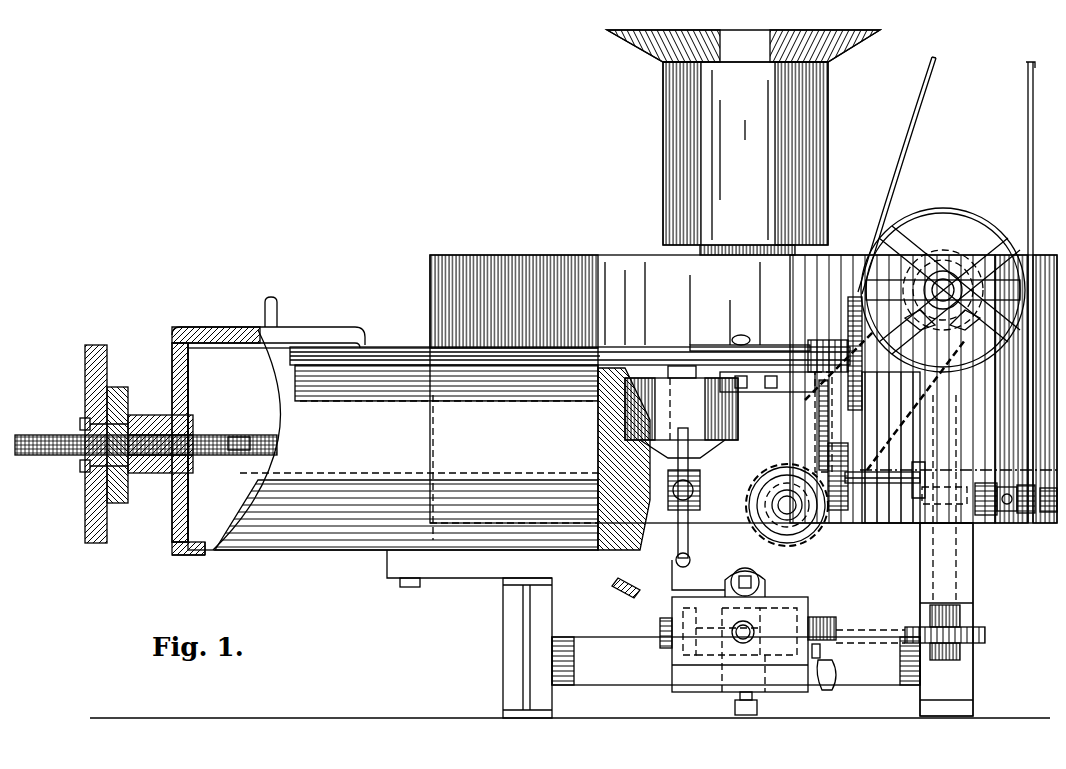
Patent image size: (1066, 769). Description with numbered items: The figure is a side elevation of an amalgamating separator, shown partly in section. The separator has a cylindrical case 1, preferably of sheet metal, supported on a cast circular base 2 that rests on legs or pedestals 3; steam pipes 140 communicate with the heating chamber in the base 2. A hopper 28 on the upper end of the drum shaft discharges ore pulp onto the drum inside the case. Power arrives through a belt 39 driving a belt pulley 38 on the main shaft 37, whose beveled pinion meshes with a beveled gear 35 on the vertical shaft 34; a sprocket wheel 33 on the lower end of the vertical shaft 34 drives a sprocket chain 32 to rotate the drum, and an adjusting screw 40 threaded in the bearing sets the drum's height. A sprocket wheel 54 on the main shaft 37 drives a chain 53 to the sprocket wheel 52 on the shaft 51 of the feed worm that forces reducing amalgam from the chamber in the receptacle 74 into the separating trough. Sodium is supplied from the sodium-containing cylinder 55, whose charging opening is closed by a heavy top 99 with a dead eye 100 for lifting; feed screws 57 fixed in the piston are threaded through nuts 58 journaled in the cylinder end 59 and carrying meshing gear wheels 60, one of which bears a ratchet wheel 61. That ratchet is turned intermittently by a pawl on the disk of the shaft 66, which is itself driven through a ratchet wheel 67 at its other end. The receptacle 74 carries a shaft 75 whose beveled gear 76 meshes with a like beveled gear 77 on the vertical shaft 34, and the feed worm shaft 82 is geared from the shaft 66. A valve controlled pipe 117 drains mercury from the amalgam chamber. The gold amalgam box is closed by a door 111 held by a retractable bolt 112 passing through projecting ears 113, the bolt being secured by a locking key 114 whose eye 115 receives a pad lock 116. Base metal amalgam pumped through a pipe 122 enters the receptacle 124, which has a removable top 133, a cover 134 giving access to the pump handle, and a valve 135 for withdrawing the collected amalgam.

The cylindrical case 1 is at (590, 255).
The cast circular base 2 is at (870, 522).
The legs or pedestals 3 is at (503, 618).
The hopper 28 is at (663, 142).
The sprocket chain 32 is at (876, 644).
The sprocket wheel 33 is at (982, 630).
The vertical shaft 34 is at (930, 615).
The beveled gear 35 is at (942, 329).
The main shaft 37 is at (946, 288).
The belt pulley 38 is at (928, 212).
The belt 39 is at (916, 92).
The adjusting screw 40 is at (735, 705).
The shaft 51 is at (787, 520).
The sprocket wheel 52 is at (805, 530).
The chain 53 is at (916, 416).
The sprocket wheel 54 is at (943, 274).
The sodium-containing cylinder 55 is at (419, 440).
The feed screws 57 is at (30, 435).
The nuts 58 is at (152, 415).
The end of the cylinder 59 is at (188, 392).
The gear wheels 60 is at (115, 387).
The ratchet wheel 61 is at (92, 345).
The shaft 66 is at (622, 347).
The ratchet wheel 67 is at (848, 315).
The receptacle 74 is at (760, 392).
The shaft 75 is at (896, 484).
The beveled gear 76 is at (925, 500).
The beveled gear 77 is at (940, 487).
The shaft 82 is at (238, 437).
The heavy top 99 is at (218, 327).
The dead eye 100 is at (277, 302).
The door 111 is at (770, 605).
The retractable bolt 112 is at (660, 626).
The projecting ears 113 is at (688, 610).
The locking key 114 is at (826, 620).
The eye 115 is at (822, 652).
The pad lock 116 is at (832, 682).
The valve controlled pipe 117 is at (618, 580).
The pipe 122 is at (688, 540).
The receptacle 124 is at (725, 410).
The removable top 133 is at (668, 370).
The cover 134 is at (720, 350).
The valve 135 is at (700, 488).
The steam pipes 140 is at (1030, 515).